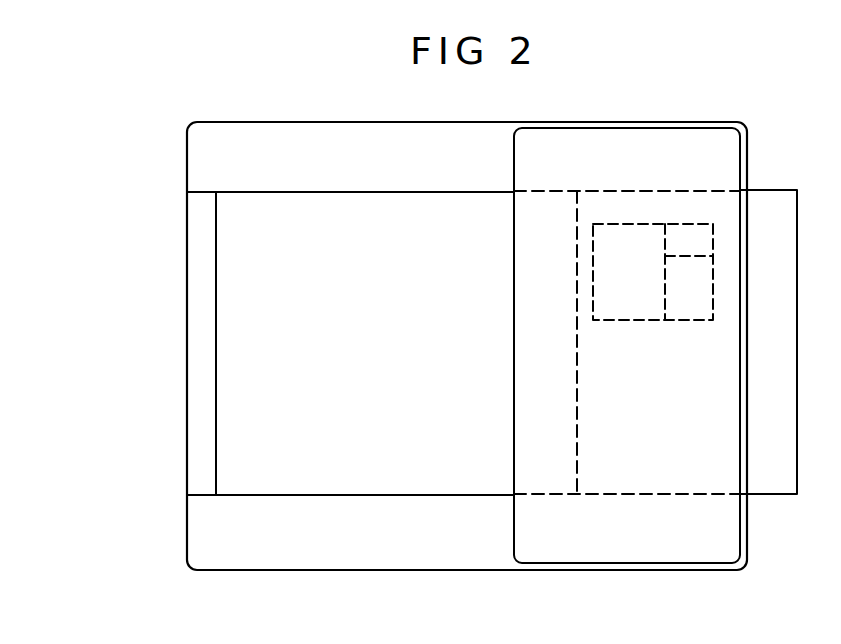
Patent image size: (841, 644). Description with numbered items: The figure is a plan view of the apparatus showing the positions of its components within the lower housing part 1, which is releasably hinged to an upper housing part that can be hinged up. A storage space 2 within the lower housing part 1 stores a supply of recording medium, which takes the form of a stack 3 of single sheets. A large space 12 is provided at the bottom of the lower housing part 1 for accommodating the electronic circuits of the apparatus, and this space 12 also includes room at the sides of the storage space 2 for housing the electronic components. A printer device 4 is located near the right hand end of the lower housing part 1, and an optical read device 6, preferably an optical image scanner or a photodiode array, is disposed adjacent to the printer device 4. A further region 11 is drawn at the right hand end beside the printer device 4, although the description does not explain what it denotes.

The lower housing part 1 is at (278, 123).
The storage space 2 is at (197, 229).
The stack 3 is at (246, 218).
The printer device 4 is at (697, 288).
The optical read device 6 is at (697, 244).
The cover plate 11 is at (765, 480).
The large space 12 is at (361, 149).